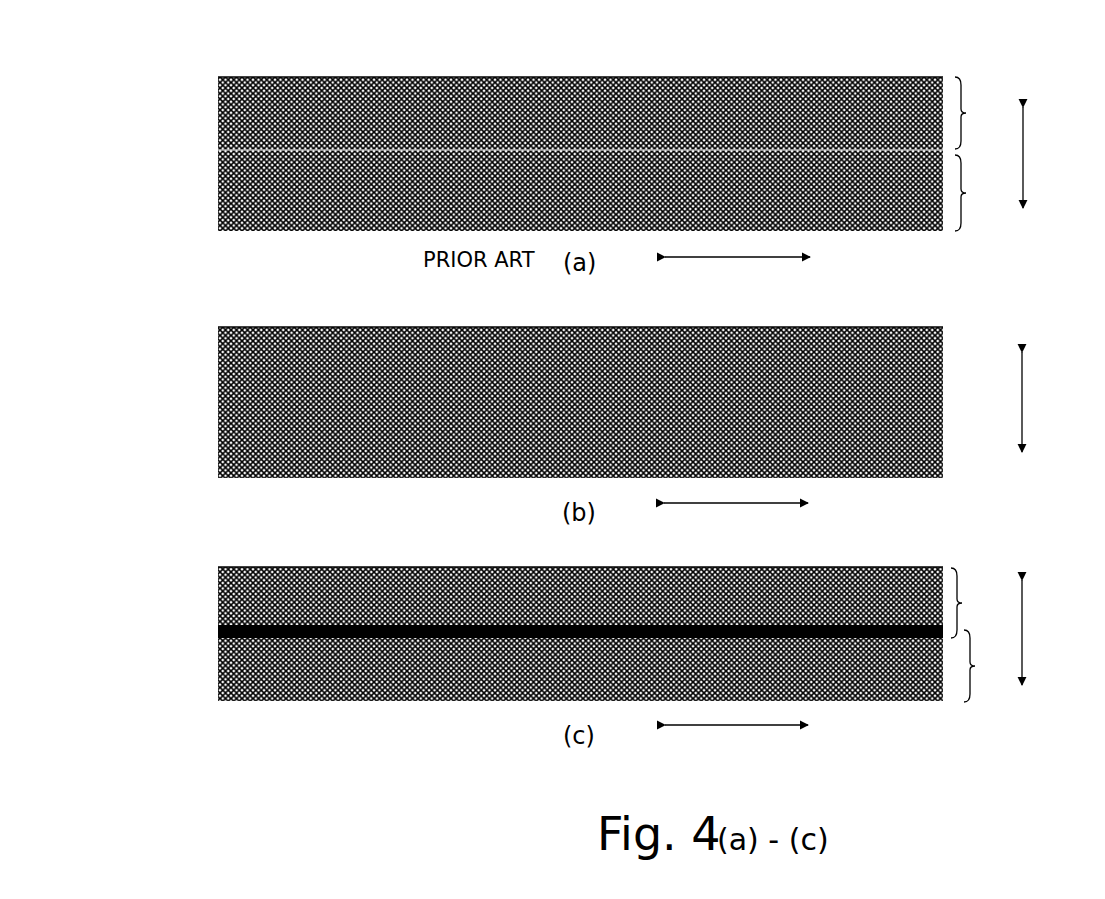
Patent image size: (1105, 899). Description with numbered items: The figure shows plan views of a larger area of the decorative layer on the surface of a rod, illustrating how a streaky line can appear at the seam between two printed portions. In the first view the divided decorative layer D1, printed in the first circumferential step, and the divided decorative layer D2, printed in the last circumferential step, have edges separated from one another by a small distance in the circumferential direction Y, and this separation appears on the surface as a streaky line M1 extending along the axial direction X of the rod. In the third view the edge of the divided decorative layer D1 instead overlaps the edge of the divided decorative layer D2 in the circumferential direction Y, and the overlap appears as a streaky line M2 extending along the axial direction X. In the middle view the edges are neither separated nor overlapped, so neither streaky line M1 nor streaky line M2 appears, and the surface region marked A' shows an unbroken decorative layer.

In FIG. 4a, the streaky line M1 is at (218, 150).
In FIG. 4c, the streaky line M2 is at (218, 632).
In FIG. 4a, the surface of the material A' is at (580, 52).
In FIG. 4b, the surface of the material A' is at (580, 303).
In FIG. 4c, the surface of the material A' is at (580, 543).
In FIG. 4a, the divided decorative layer D1 is at (975, 113).
In FIG. 4c, the divided decorative layer D1 is at (971, 603).
In FIG. 4a, the divided decorative layer D2 is at (975, 193).
In FIG. 4c, the divided decorative layer D2 is at (984, 666).
In FIG. 4a, the axial direction X is at (737, 271).
In FIG. 4b, the axial direction X is at (736, 517).
In FIG. 4c, the axial direction X is at (736, 739).
In FIG. 4a, the circumferential direction Y is at (1032, 157).
In FIG. 4b, the circumferential direction Y is at (1032, 402).
In FIG. 4c, the circumferential direction Y is at (1032, 632).